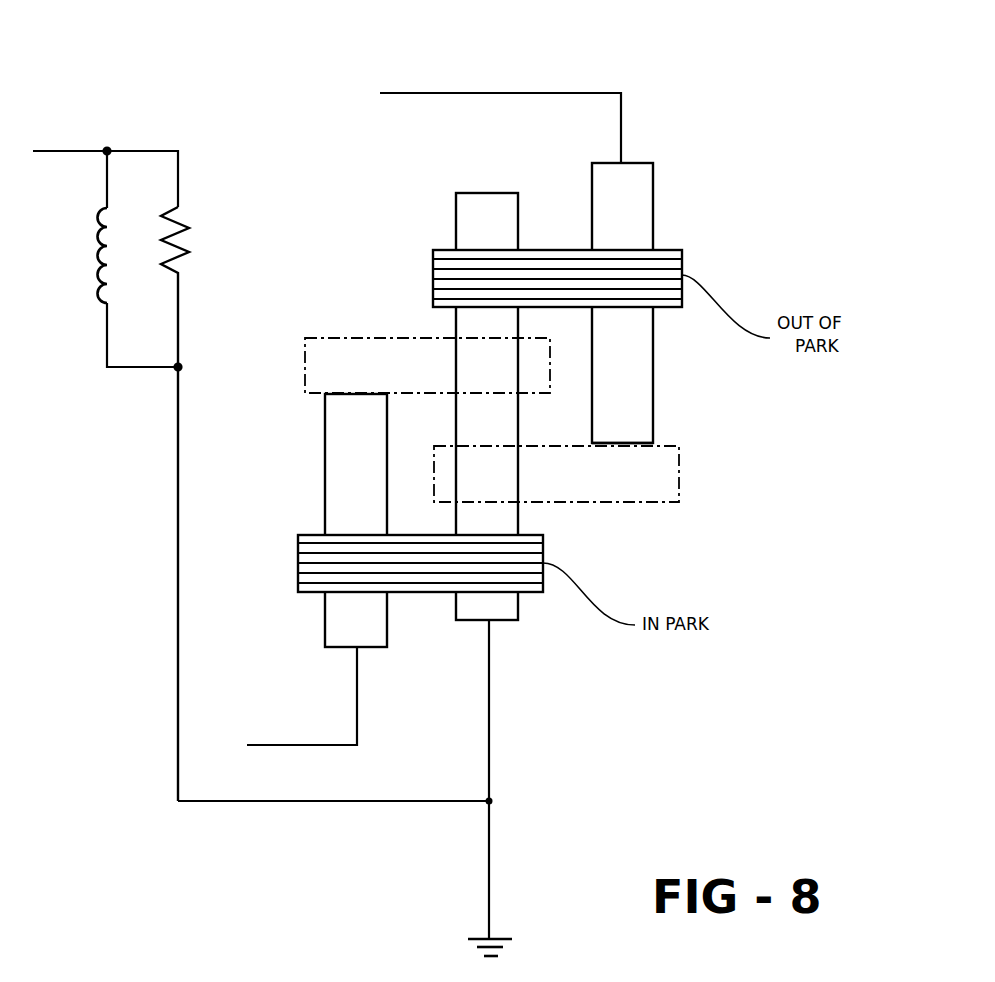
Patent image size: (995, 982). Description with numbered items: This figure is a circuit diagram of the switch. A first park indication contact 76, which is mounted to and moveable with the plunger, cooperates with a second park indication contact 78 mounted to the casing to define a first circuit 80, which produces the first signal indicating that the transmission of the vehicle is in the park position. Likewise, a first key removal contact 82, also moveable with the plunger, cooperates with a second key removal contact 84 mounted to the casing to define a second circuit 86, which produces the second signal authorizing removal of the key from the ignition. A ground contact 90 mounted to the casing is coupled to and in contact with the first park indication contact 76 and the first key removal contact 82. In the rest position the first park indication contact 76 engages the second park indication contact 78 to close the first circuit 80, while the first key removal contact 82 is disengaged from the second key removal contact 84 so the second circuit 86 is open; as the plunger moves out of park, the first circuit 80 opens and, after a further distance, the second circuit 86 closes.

The first park indication contact 76 is at (298, 553).
The second park indication contact 78 is at (325, 483).
The first circuit 80 is at (287, 745).
The first key removal contact 82 is at (640, 201).
The second key removal contact 84 is at (627, 397).
The second circuit 86 is at (437, 93).
The ground contact 90 is at (503, 607).